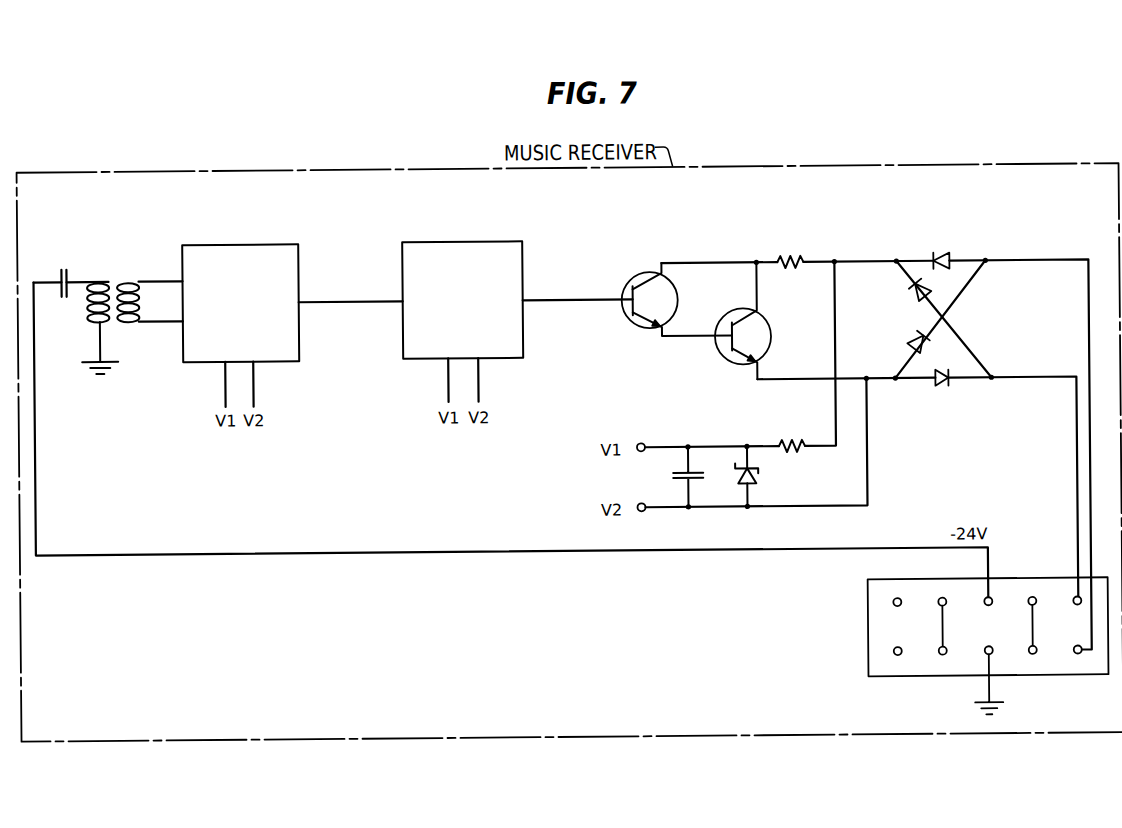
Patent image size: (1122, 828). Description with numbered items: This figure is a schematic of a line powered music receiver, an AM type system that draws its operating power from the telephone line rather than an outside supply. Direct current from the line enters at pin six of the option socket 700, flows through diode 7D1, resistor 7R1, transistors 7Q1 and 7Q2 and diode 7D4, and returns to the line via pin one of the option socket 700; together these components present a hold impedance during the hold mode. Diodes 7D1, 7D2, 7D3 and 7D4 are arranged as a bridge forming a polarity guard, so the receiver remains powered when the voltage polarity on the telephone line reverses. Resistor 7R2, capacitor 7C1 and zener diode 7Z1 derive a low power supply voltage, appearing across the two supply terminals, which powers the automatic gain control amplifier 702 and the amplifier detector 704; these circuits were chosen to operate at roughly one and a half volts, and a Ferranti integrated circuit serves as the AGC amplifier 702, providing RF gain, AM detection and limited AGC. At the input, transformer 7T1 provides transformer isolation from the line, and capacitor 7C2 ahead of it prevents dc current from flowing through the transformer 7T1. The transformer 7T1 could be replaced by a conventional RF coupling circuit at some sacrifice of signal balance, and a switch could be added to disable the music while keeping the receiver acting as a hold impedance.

The capacitor 7C2 is at (64, 263).
The transformer 7T1 is at (110, 315).
The automatic gain control (AGC) amplifier 702 is at (234, 242).
The amplifier detector 704 is at (456, 241).
The transistor 7Q1 is at (636, 272).
The transistor 7Q2 is at (736, 318).
The resistor 7R1 is at (792, 258).
The resistor 7R2 is at (790, 442).
The capacitor 7C1 is at (673, 476).
The zener diode 7Z1 is at (754, 476).
The diode 7D1 is at (941, 256).
The diode 7D2 is at (905, 287).
The diode 7D3 is at (906, 344).
The diode 7D4 is at (946, 387).
The option socket 700 is at (866, 625).